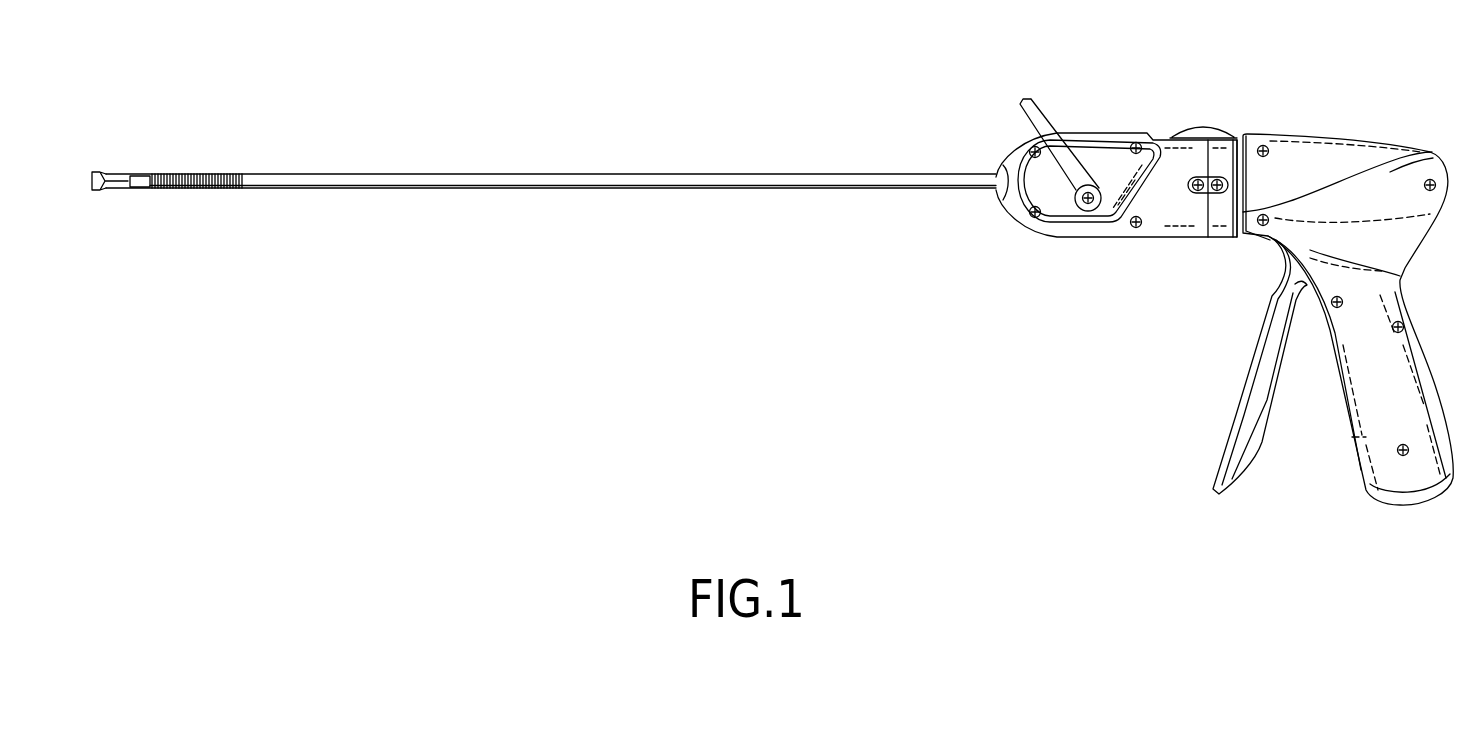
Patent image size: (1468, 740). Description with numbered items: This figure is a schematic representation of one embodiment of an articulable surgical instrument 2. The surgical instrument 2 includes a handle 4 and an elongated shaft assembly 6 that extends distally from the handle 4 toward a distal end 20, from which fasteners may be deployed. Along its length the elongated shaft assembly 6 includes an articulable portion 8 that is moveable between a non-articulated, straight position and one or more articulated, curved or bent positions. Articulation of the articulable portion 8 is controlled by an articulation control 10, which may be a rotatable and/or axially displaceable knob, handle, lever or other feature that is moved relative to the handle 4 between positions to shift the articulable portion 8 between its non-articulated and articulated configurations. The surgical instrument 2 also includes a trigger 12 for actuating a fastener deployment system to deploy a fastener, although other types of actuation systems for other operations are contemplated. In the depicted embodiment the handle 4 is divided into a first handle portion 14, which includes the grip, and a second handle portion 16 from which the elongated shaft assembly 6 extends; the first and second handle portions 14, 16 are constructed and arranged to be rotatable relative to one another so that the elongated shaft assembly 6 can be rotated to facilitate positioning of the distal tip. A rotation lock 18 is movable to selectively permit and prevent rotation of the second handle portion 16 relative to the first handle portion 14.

The surgical instrument 2 is at (590, 59).
The handle 4 is at (1411, 132).
The elongated shaft assembly 6 is at (600, 187).
The articulable portion 8 is at (243, 166).
The articulation control 10 is at (1024, 100).
The trigger 12 is at (1243, 386).
The first handle portion 14 is at (1328, 138).
The second handle portion 16 is at (1164, 240).
The rotation lock 18 is at (1203, 128).
The distal end 20 is at (97, 191).